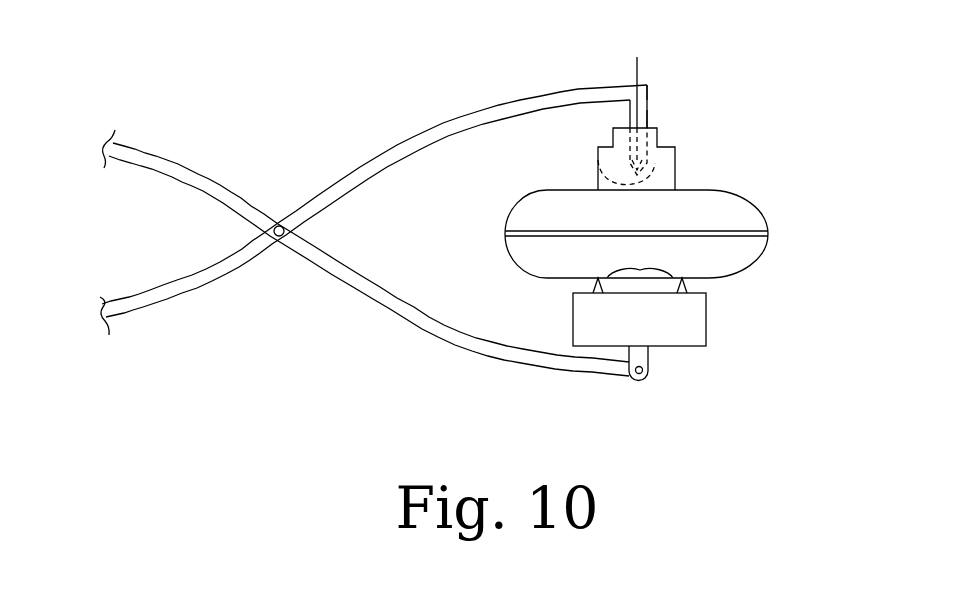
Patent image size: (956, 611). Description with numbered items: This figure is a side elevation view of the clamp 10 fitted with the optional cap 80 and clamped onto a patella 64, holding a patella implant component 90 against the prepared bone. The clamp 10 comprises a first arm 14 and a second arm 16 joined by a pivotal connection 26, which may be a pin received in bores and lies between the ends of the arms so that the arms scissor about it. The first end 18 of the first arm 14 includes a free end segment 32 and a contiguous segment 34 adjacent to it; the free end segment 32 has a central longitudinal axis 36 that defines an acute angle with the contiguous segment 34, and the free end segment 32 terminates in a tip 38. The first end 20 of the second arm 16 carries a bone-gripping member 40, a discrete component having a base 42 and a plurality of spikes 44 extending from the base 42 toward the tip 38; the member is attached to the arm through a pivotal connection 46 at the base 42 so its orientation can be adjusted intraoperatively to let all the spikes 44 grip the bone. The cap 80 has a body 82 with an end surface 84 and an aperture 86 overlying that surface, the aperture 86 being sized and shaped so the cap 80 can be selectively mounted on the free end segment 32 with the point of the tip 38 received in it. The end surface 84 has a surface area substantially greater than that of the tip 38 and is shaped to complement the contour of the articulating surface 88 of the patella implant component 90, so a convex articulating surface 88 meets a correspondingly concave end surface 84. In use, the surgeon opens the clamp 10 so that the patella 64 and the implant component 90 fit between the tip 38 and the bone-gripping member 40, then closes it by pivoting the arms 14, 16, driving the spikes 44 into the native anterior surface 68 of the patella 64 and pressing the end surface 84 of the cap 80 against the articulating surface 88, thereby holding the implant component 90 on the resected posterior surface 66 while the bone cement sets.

The clamp 10 is at (214, 284).
The first arm 14 is at (415, 128).
The second arm 16 is at (457, 352).
The first end 18 is at (647, 84).
The first end 20 is at (620, 379).
The pivotal connection 26 is at (281, 225).
The free end segment 32 is at (647, 118).
The contiguous segment 34 is at (612, 83).
The central longitudinal axis 36 is at (640, 68).
The tip 38 is at (598, 163).
The bone-gripping member 40 is at (585, 312).
The base 42 is at (695, 328).
The spikes 44 is at (640, 270).
The pivotal connection 46 is at (645, 373).
The patella 64 is at (742, 258).
The resected posterior surface 66 is at (745, 233).
The native anterior surface 68 is at (712, 282).
The cap 80 is at (612, 146).
The body 82 is at (650, 193).
The end surface 84 is at (680, 190).
The aperture 86 is at (657, 127).
The articulating surface 88 is at (702, 190).
The patella implant component 90 is at (532, 196).